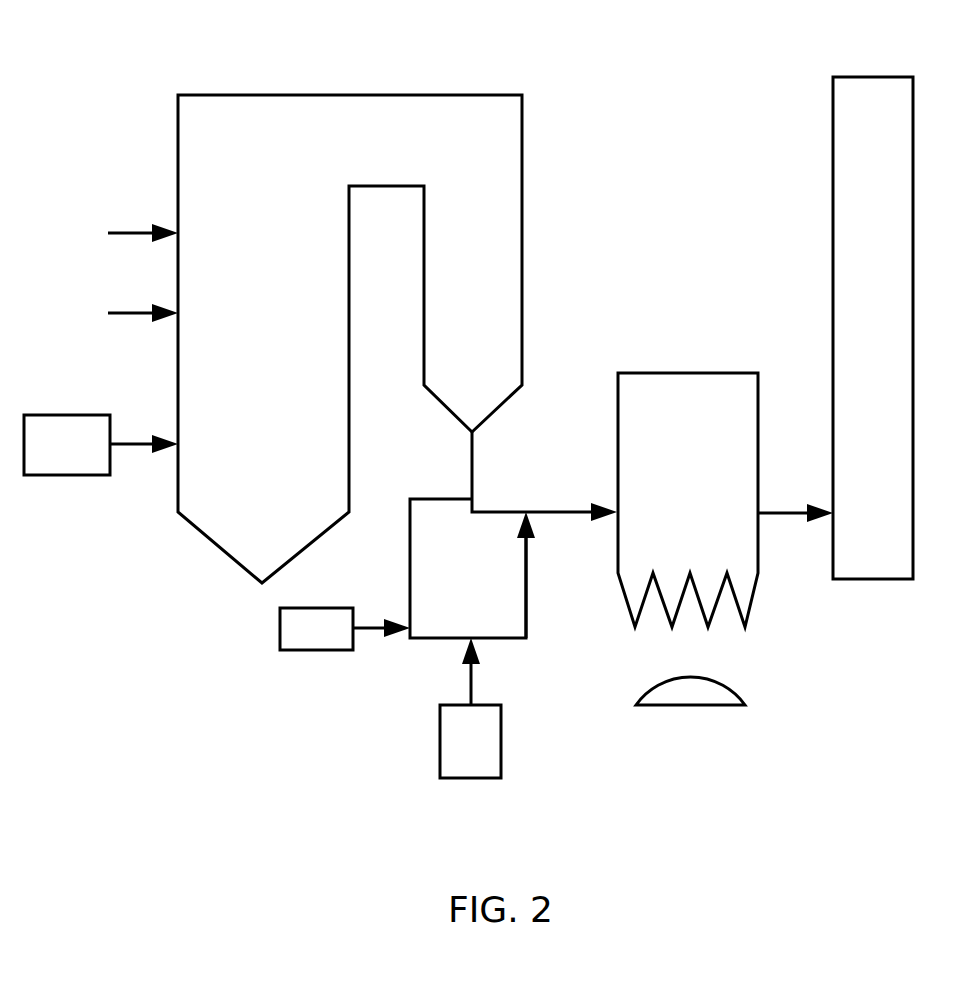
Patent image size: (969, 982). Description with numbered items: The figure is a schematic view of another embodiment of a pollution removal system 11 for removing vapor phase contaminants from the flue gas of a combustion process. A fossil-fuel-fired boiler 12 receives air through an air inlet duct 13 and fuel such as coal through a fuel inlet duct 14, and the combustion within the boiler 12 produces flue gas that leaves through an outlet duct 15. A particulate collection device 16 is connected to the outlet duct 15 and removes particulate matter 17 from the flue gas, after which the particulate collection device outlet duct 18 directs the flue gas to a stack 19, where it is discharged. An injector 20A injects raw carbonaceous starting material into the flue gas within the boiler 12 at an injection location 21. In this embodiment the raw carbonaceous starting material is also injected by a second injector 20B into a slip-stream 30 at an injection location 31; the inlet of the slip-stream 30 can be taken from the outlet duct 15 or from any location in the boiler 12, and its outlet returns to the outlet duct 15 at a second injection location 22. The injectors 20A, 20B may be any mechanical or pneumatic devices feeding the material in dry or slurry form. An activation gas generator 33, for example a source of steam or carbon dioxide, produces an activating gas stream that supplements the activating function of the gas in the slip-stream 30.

The pollution removal system 11 is at (659, 185).
The fossil-fuel-fired boiler 12 is at (222, 553).
The air inlet duct 13 is at (128, 233).
The fuel inlet duct 14 is at (128, 313).
The outlet duct 15 is at (471, 438).
The particulate collection device 16 is at (643, 373).
The particulate matter 17 is at (713, 678).
The particulate collection device outlet duct 18 is at (778, 505).
The stack 19 is at (852, 77).
The injector 20A is at (62, 475).
The second injector 20B is at (501, 722).
The injection location 21 is at (178, 444).
The second injection location 22 is at (526, 500).
The slip-stream 30 is at (410, 517).
The injection location 31 is at (470, 637).
The activation gas generator 33 is at (300, 650).